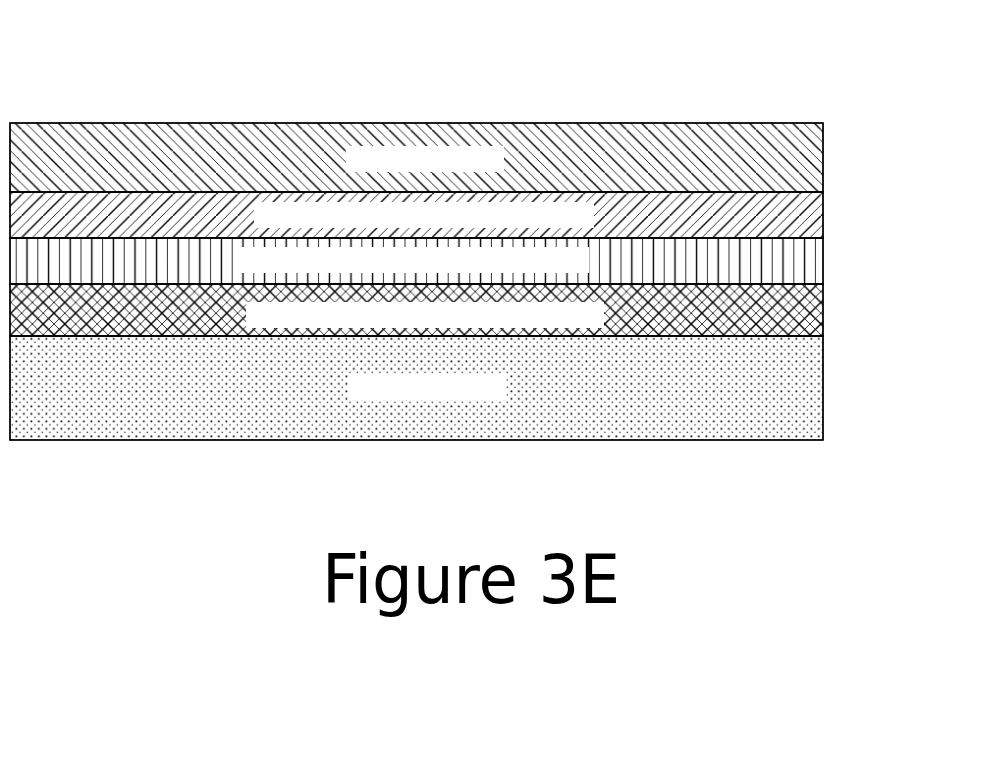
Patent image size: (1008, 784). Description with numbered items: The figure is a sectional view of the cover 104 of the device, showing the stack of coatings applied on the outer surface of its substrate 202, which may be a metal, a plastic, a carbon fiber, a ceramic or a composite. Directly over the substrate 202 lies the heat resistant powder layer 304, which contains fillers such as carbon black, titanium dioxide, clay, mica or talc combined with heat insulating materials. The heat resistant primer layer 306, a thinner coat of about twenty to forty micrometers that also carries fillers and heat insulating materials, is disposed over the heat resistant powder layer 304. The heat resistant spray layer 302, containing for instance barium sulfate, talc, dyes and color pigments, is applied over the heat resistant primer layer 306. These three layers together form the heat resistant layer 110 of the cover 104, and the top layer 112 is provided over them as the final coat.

The cover 104 is at (461, 239).
The heat resistant layer 110 is at (461, 231).
The top layer 112 is at (500, 170).
The heat resistant spray layer 302 is at (590, 226).
The heat resistant primer layer 306 is at (586, 272).
The heat resistant powder layer 304 is at (600, 326).
The substrate 202 is at (497, 398).